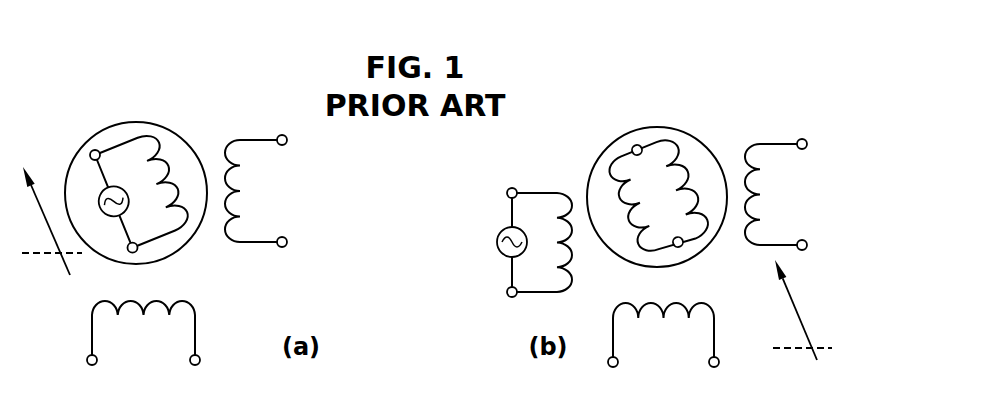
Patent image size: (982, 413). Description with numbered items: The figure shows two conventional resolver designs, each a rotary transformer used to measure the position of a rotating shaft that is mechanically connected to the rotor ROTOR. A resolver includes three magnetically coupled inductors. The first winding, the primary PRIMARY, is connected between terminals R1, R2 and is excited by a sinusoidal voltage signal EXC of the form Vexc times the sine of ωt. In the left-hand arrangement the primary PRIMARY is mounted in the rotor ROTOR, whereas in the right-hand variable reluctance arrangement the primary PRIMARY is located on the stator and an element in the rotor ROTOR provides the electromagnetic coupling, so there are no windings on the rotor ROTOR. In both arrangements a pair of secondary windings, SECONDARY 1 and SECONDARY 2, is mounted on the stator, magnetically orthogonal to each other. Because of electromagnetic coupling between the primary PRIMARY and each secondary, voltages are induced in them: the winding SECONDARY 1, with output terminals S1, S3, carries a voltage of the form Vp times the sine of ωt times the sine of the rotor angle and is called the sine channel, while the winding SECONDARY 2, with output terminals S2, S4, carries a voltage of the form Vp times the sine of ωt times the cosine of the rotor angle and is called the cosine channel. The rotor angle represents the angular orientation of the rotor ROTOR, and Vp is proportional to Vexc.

The rotor ROTOR is at (135, 123).
The primary winding PRIMARY is at (403, 211).
The excitation signal EXC is at (304, 219).
The primary terminal R1 is at (289, 163).
The primary terminal R2 is at (326, 283).
The secondary winding (sine channel) SECONDARY 1 is at (407, 354).
The secondary winding (cosine channel) SECONDARY 2 is at (563, 192).
The sine channel terminal S1 is at (340, 362).
The sine channel terminal S3 is at (467, 362).
The cosine channel terminal S2 is at (556, 143).
The cosine channel terminal S4 is at (556, 244).